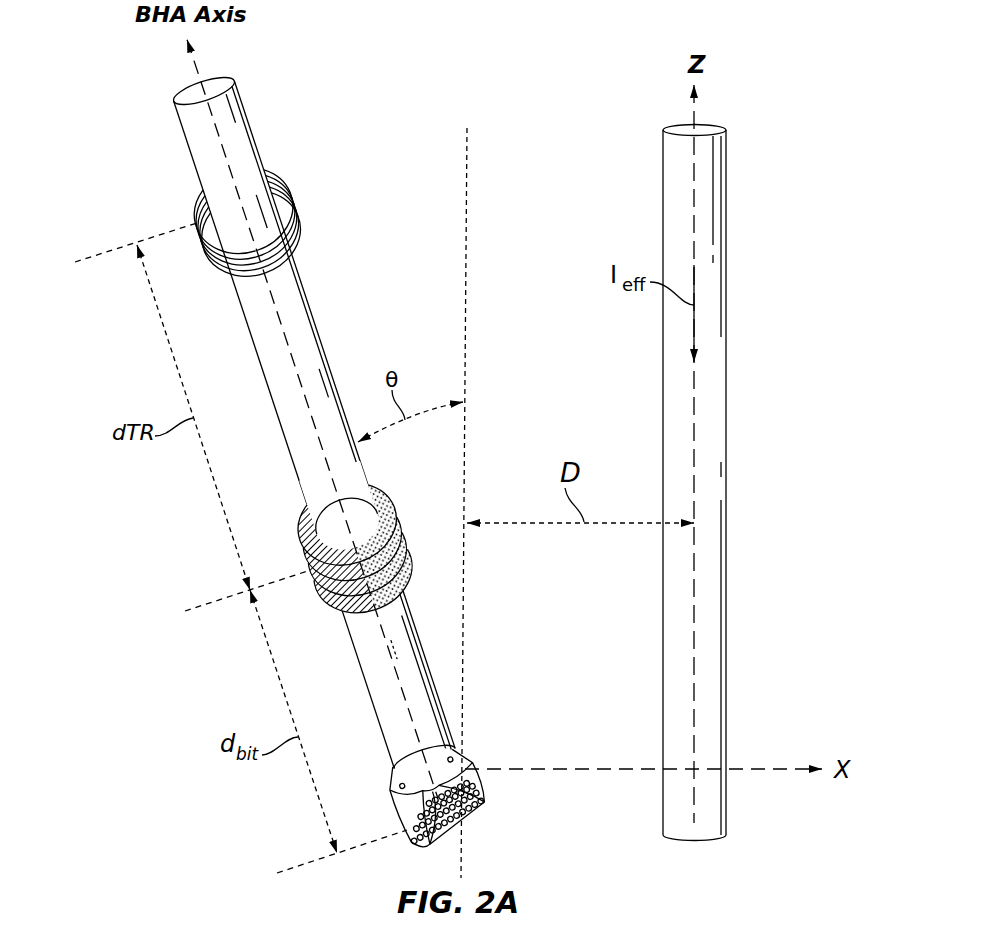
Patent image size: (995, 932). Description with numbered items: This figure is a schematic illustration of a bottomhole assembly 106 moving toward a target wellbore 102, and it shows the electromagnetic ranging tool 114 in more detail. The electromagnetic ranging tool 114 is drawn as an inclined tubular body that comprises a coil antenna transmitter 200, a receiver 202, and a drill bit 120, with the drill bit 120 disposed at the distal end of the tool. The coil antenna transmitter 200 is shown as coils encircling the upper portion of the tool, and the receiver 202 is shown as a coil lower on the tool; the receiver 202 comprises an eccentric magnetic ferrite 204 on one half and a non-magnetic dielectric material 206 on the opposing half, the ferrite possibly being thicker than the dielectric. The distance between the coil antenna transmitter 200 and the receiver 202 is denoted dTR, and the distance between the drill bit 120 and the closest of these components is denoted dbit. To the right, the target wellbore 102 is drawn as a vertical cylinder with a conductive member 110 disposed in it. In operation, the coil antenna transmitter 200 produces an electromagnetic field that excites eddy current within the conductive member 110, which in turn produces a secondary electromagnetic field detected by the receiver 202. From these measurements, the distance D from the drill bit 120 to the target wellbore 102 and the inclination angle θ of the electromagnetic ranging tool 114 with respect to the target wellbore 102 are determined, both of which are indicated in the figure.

The target wellbore 102 is at (750, 388).
The bottom hole assembly 106 is at (130, 642).
The conductive member 110 is at (720, 618).
The electromagnetic ranging tool 114 is at (363, 652).
The drill bit 120 is at (488, 814).
The coil antenna transmitter 200 is at (292, 200).
The receiver 202 is at (417, 532).
The eccentric magnetic ferrite 204 is at (380, 505).
The non-magnetic dielectric material 206 is at (306, 521).